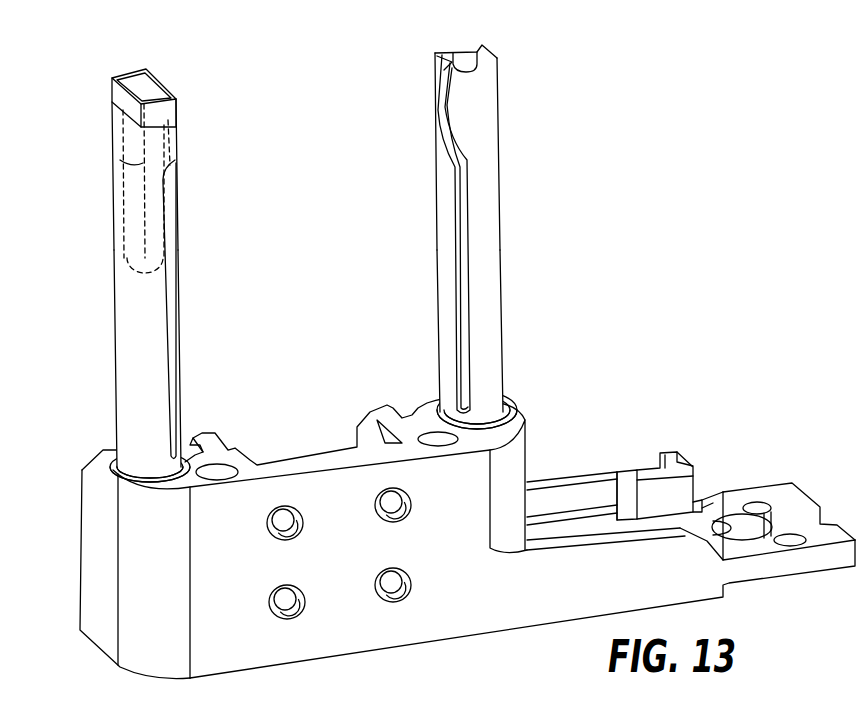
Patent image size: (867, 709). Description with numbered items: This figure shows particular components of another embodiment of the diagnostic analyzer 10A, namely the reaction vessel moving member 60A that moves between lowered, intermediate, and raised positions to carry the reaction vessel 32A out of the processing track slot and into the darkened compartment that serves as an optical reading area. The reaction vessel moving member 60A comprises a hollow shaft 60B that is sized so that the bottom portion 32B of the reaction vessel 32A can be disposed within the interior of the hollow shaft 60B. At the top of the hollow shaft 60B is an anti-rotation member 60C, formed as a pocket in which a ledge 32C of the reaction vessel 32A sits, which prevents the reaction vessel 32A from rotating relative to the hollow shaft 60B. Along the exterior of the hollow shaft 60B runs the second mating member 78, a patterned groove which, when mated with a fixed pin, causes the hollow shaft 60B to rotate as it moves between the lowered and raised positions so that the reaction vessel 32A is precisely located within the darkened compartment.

The diagnostic analyzer 10A is at (643, 198).
The reaction vessel 32A is at (140, 163).
The bottom portion of the reaction vessel 32B is at (137, 255).
The ledge of the reaction vessel 32C is at (132, 78).
The reaction vessel moving member 60A is at (178, 140).
The hollow shaft 60B is at (130, 340).
The anti-rotation member 60C is at (466, 50).
The second mating member 78 is at (173, 295).